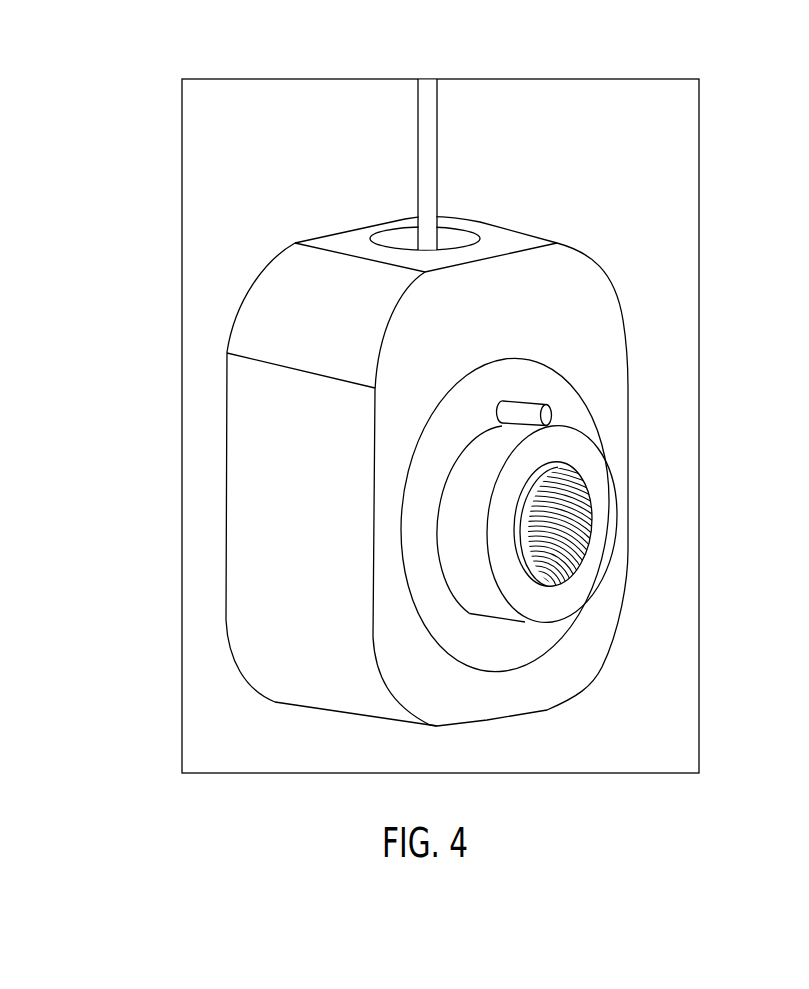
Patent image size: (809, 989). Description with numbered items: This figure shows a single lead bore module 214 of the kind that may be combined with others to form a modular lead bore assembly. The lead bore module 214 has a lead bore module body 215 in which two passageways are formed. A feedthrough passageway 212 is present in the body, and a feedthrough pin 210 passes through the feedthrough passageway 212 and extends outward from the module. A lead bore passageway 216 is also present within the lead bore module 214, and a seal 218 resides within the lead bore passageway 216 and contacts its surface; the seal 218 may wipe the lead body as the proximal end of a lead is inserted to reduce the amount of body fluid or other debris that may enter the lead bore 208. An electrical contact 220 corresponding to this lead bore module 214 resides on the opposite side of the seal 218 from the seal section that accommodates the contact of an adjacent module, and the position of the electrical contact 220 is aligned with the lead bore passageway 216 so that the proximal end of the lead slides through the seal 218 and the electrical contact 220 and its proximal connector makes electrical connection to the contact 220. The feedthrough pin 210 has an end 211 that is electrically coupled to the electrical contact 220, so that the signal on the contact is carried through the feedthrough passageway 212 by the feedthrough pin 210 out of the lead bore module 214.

The lead bore 208 is at (597, 548).
The feedthrough pin 210 is at (428, 103).
The end 211 is at (523, 407).
The feedthrough passageway 212 is at (485, 238).
The lead bore module 214 is at (298, 320).
The lead bore module body 215 is at (322, 484).
The lead bore passageway 216 is at (503, 357).
The seal 218 is at (565, 412).
The electrical contact 220 is at (585, 457).